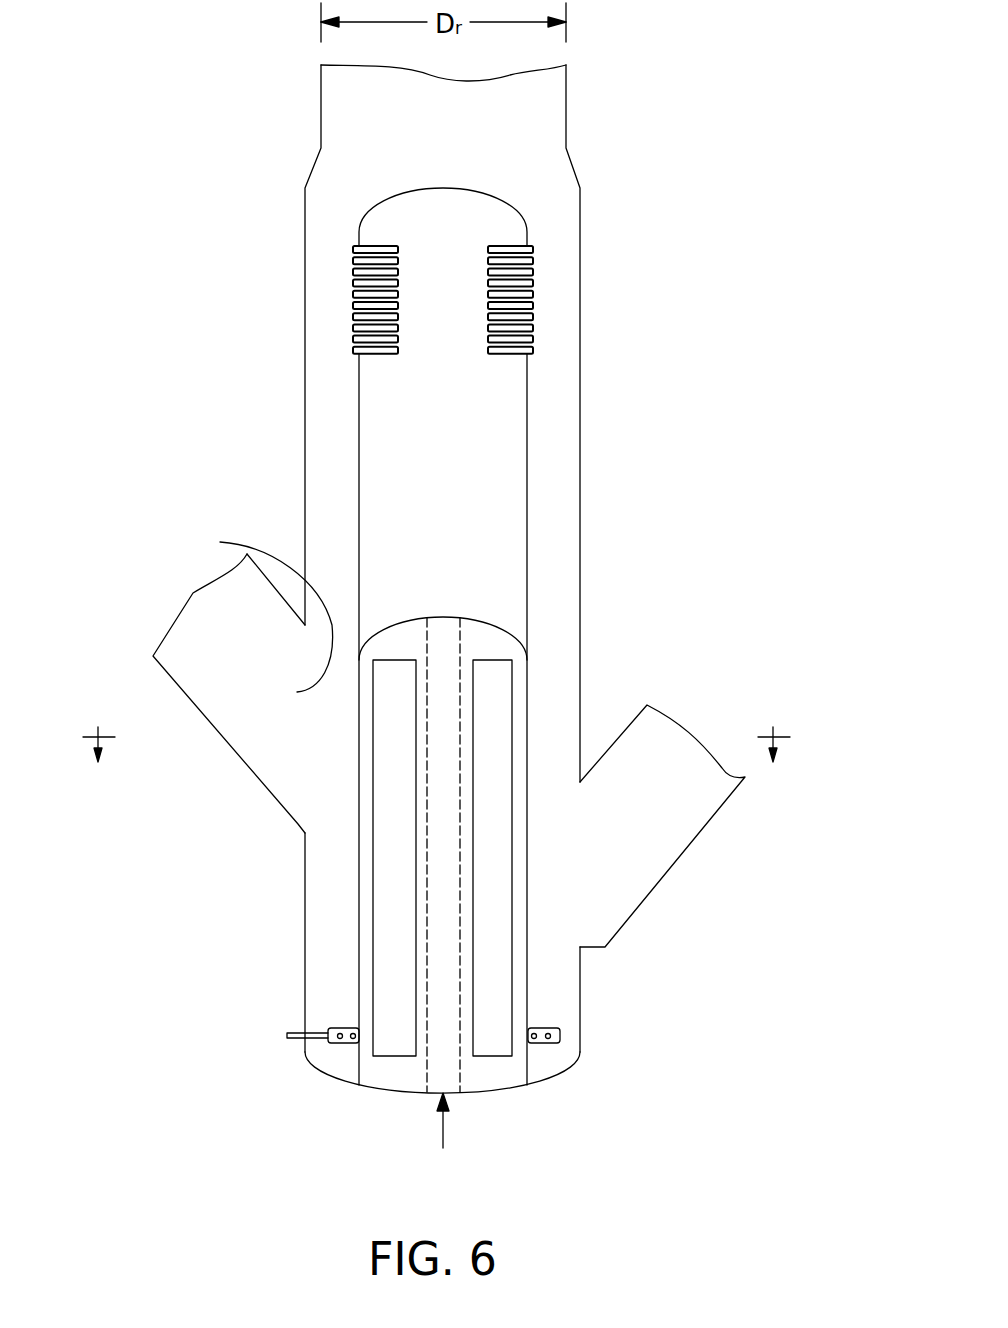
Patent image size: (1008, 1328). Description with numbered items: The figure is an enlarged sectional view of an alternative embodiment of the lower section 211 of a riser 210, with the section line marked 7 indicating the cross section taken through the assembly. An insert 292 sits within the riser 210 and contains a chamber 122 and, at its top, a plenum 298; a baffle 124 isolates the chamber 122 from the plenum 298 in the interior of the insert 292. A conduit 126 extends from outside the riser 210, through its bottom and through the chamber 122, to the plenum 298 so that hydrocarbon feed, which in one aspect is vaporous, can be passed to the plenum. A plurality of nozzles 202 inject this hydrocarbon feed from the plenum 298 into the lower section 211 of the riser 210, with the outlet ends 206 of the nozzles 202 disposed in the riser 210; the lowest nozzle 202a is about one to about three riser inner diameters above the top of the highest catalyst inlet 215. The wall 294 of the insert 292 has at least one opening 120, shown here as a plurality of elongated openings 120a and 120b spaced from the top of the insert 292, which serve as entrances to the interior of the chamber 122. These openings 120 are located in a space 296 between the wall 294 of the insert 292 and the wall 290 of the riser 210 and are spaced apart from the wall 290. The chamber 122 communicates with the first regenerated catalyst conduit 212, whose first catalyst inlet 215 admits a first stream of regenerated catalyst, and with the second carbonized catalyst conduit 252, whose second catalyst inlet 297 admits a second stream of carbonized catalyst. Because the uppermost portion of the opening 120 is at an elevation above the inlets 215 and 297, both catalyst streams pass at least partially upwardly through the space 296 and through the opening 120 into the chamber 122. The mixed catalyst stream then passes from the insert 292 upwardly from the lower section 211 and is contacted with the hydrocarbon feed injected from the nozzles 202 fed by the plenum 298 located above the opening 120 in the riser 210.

The opening 120 is at (481, 858).
The opening 120a is at (490, 760).
The opening 120b is at (390, 880).
The chamber 122 is at (400, 650).
The baffle 124 is at (508, 633).
The conduit 126 is at (457, 1057).
The nozzle 202 is at (503, 243).
The lowest nozzle 202a is at (353, 349).
The outlet end 206 is at (537, 250).
The riser 210 is at (665, 322).
The lower section 211 is at (280, 295).
The first regenerated catalyst conduit 212 is at (213, 725).
The first catalyst inlet 215 is at (250, 610).
The second carbonized catalyst conduit 252 is at (733, 800).
The wall of the riser 290 is at (306, 1000).
The insert 292 is at (359, 920).
The wall of the insert 294 is at (530, 933).
The space 296 is at (542, 893).
The second catalyst inlet 297 is at (580, 808).
The plenum 298 is at (442, 245).
The section line 7- 7 is at (442, 744).